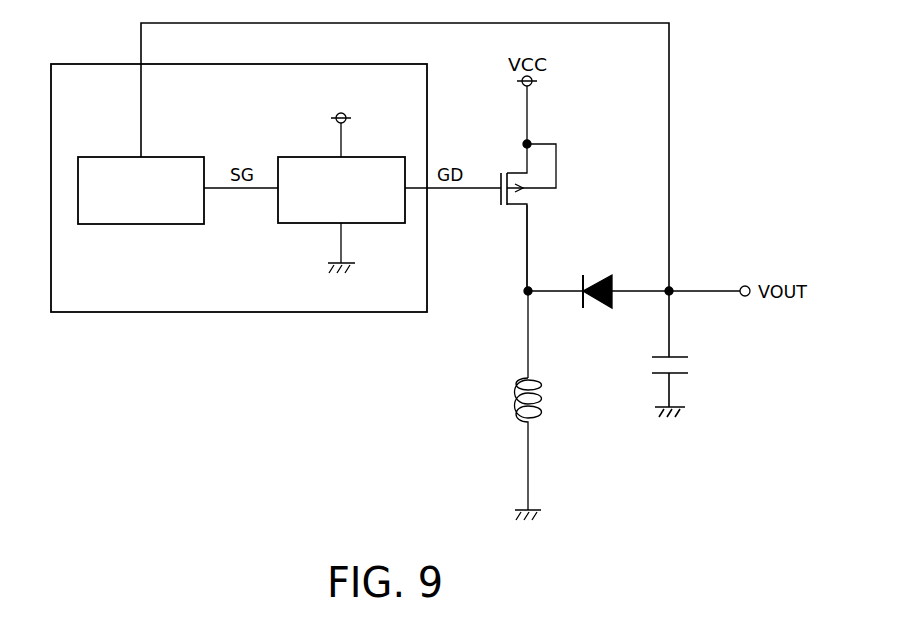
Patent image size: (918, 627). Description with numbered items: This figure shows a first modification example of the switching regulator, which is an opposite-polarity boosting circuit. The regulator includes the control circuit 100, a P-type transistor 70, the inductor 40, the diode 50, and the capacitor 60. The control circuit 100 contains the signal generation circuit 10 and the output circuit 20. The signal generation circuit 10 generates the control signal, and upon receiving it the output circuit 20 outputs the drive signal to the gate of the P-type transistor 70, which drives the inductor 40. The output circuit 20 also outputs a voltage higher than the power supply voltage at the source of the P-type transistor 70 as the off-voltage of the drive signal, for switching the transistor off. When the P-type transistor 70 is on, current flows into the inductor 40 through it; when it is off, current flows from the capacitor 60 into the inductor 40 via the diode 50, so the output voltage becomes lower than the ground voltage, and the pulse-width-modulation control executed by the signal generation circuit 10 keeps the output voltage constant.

The control circuit 100 is at (125, 313).
The signal generation circuit 10 is at (160, 157).
The output circuit 20 is at (360, 157).
The P-type transistor 70 is at (515, 171).
The diode 50 is at (590, 275).
The capacitor 60 is at (660, 356).
The inductor 40 is at (544, 398).